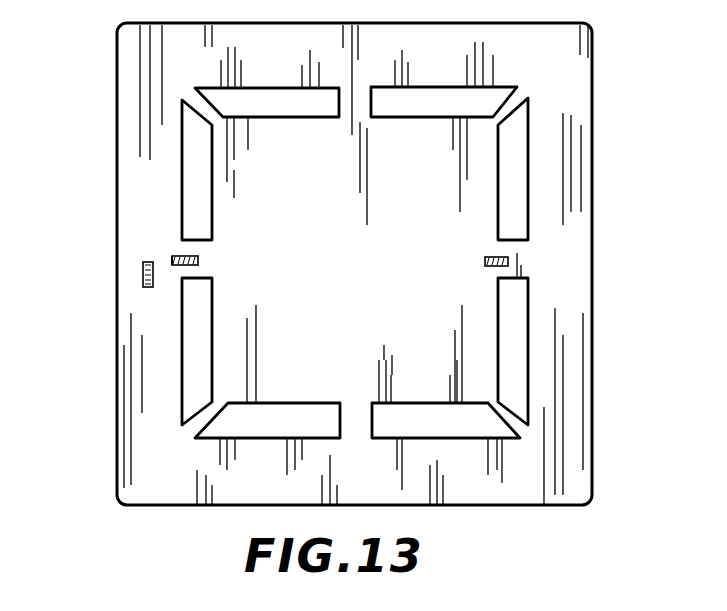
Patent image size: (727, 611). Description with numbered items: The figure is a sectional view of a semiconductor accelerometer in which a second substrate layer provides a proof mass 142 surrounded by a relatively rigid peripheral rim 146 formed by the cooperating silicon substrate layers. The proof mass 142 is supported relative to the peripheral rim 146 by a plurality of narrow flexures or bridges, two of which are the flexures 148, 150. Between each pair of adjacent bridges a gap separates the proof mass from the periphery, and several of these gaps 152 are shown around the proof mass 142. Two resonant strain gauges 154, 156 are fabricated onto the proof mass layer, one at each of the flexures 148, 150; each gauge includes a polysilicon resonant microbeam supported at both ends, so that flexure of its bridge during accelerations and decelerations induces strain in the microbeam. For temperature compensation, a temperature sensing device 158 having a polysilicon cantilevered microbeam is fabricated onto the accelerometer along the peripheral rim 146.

The proof mass 142 is at (355, 262).
The peripheral rim 146 is at (562, 85).
The flexure 148 is at (210, 262).
The flexure 150 is at (530, 260).
The gap 152 is at (411, 116).
The resonant strain gauge 154 is at (185, 257).
The resonant strain gauge 156 is at (484, 262).
The temperature sensing device 158 is at (143, 277).